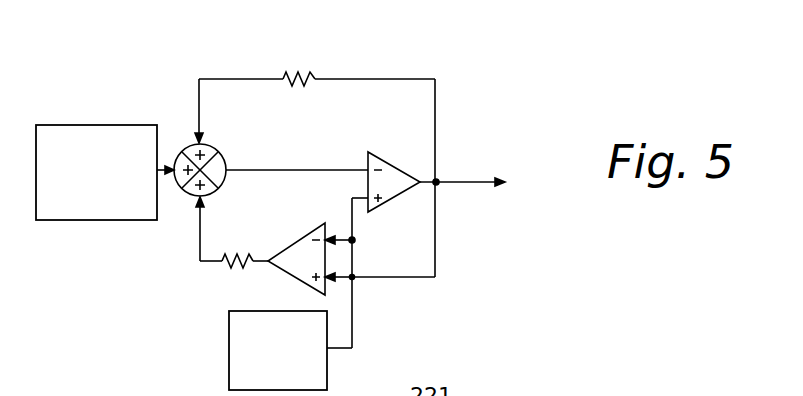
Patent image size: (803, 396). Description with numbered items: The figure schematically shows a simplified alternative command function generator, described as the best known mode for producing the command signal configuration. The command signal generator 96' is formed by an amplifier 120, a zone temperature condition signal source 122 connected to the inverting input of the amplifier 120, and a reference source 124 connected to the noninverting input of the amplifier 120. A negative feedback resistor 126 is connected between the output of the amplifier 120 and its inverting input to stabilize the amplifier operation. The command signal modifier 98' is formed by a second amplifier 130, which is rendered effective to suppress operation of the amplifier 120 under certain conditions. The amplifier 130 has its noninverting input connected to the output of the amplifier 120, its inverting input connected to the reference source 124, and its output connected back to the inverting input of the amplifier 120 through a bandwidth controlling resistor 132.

The zone temperature condition signal source 122 is at (82, 125).
The negative feedback resistor 126 is at (300, 74).
The amplifier 120 is at (397, 166).
The amplifier 130 is at (300, 242).
The bandwidth controlling resistor 132 is at (225, 255).
The reference source 124 is at (229, 356).
The command signal generator 96' is at (438, 174).
The command signal modifier 98' is at (374, 273).